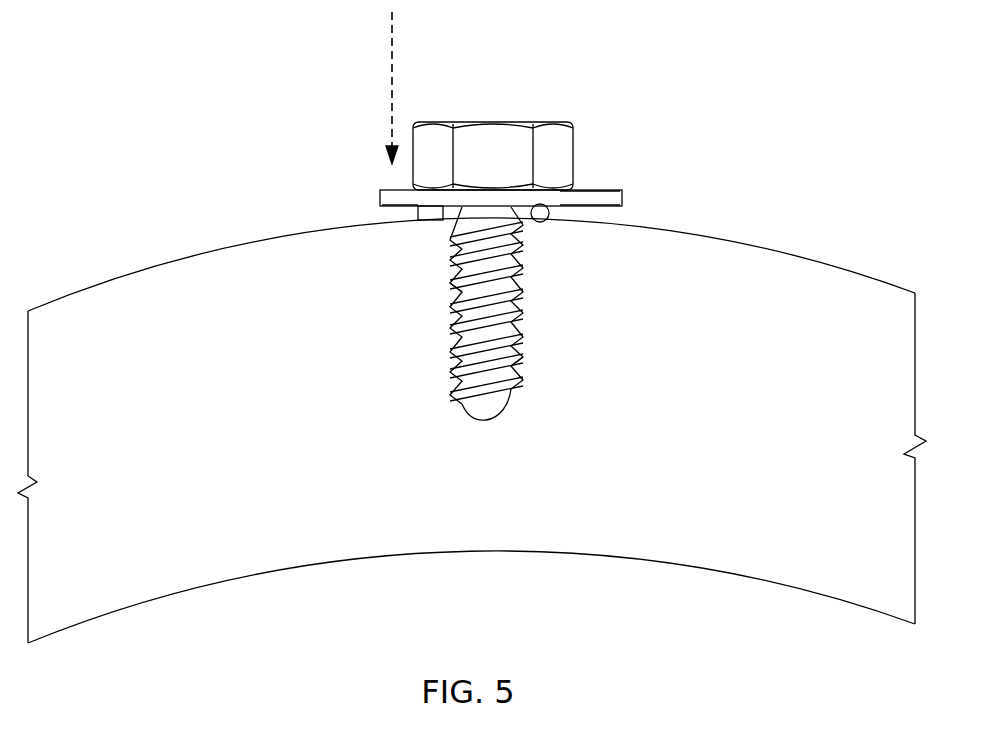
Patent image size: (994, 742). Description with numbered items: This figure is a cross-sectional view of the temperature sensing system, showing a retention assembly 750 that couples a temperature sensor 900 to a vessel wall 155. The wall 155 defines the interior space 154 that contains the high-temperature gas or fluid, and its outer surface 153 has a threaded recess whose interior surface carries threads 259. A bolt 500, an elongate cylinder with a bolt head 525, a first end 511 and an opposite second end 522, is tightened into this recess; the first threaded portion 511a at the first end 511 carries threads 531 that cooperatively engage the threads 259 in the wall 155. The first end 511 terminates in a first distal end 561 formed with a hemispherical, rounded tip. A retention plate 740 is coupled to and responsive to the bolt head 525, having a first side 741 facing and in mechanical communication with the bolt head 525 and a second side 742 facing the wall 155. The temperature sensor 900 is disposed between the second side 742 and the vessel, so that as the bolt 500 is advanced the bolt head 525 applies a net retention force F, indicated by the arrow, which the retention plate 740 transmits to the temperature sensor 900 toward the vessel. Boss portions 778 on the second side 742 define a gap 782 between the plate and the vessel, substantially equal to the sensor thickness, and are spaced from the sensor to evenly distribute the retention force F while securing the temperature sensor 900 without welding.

The retention force F is at (393, 36).
The outer surface 153 is at (472, 407).
The interior space 154 is at (459, 614).
The wall 155 is at (455, 476).
The threads 259 is at (520, 370).
The bolt 500 is at (486, 314).
The first end 511 is at (512, 385).
The first threaded portion 511a is at (456, 357).
The second end 522 is at (455, 277).
The bolt head 525 is at (555, 120).
The threads 531 is at (517, 267).
The first distal end 561 is at (460, 398).
The retention plate 740 is at (515, 211).
The first side 741 is at (600, 188).
The second side 742 is at (596, 207).
The retention assembly 750 is at (537, 211).
The boss portions 778 is at (435, 221).
The gap 782 is at (400, 208).
The temperature sensor 900 is at (556, 216).